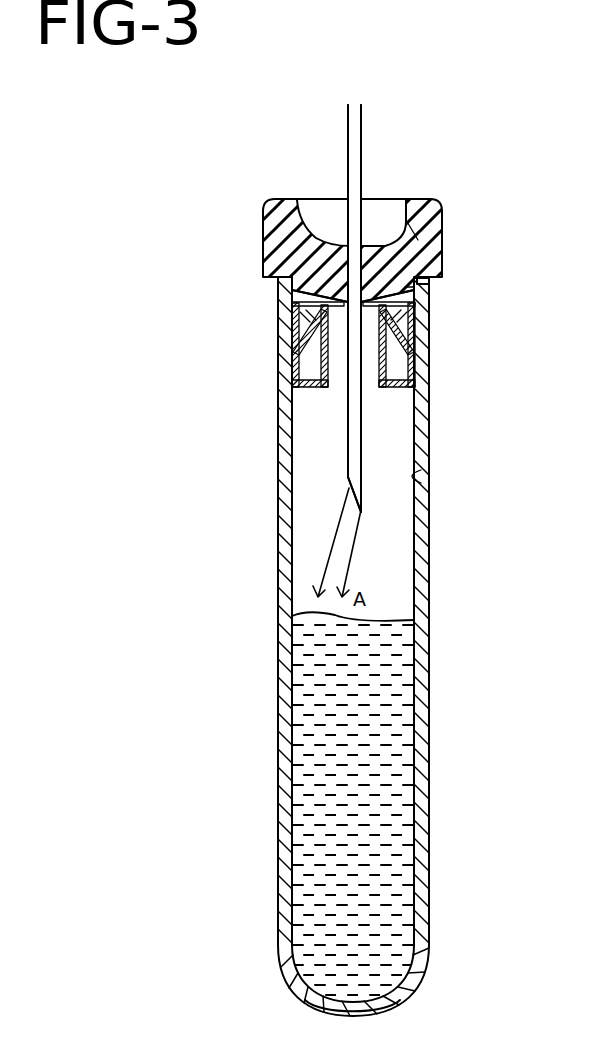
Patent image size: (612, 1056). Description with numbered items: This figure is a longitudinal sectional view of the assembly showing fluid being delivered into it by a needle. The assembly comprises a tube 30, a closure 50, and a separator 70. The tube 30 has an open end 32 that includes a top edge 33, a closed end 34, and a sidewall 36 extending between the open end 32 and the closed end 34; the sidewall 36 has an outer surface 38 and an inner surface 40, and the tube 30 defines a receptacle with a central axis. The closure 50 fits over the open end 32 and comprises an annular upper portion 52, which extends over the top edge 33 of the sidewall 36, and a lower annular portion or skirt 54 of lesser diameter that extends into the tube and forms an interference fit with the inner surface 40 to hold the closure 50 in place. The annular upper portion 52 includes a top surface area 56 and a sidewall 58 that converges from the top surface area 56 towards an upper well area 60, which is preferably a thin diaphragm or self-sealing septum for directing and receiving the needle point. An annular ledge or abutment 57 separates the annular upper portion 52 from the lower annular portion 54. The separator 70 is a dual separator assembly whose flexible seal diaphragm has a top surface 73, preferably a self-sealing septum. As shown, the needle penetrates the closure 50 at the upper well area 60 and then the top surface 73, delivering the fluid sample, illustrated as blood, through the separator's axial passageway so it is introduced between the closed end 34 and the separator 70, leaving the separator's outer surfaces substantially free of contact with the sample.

The tube 30 is at (433, 412).
The open end 32 is at (430, 310).
The top edge 33 is at (446, 287).
The closed end 34 is at (380, 1007).
The sidewall 36 is at (437, 529).
The outer surface 38 is at (433, 452).
The inner surface 40 is at (424, 484).
The closure 50 is at (442, 216).
The annular upper portion 52 is at (259, 240).
The lower annular portion 54 is at (300, 308).
The top surface area 56 is at (380, 242).
The annular ledge 57 is at (428, 276).
The sidewall 58 is at (401, 230).
The upper well area 60 is at (347, 243).
The separator 70 is at (400, 340).
The top surface 73 is at (405, 287).